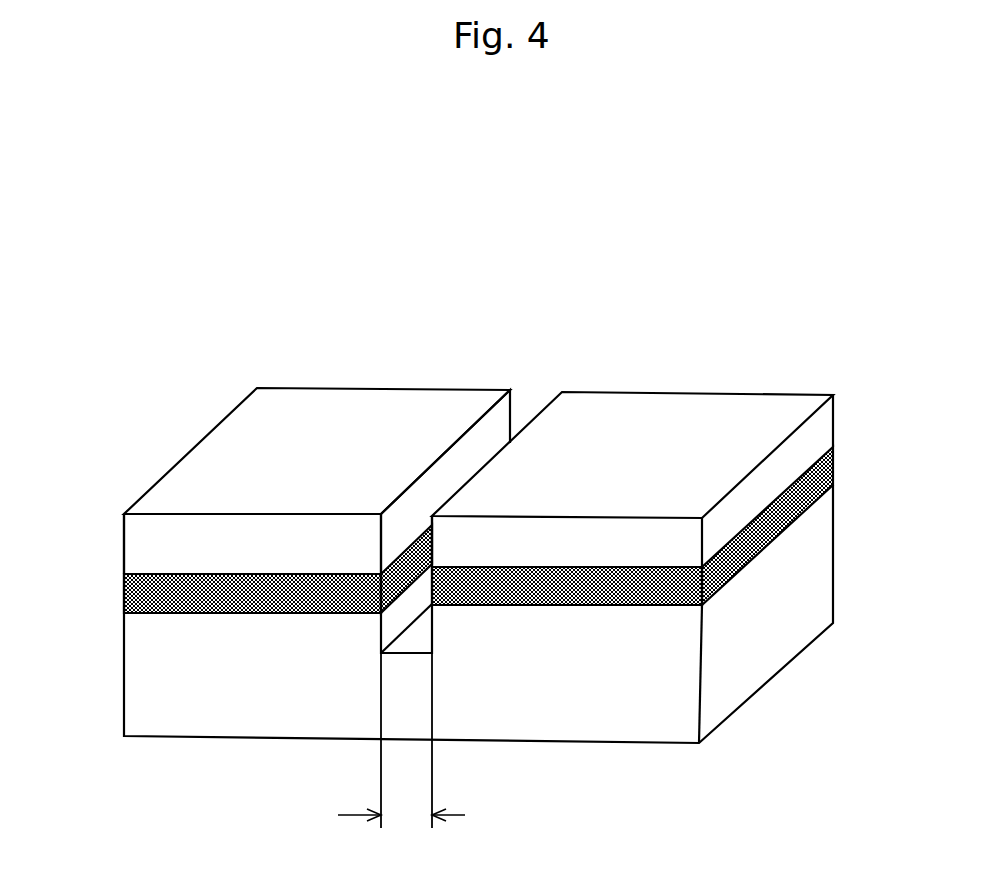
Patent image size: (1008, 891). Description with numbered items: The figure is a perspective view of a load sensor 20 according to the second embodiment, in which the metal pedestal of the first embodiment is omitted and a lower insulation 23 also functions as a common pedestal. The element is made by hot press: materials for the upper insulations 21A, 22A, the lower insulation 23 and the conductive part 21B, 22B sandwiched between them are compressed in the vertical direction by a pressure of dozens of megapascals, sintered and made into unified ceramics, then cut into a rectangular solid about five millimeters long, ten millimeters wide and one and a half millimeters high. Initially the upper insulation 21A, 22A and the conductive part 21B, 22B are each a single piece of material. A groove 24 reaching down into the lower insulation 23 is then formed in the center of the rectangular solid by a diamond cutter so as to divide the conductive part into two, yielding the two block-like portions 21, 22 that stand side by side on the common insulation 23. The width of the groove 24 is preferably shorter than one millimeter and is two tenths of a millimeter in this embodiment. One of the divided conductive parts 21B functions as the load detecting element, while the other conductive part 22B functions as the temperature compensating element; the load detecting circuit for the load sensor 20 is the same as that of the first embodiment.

The load sensor 20 is at (316, 267).
The divided element portion 21 is at (335, 410).
The insulation 21A is at (152, 542).
The conductive part 21B is at (156, 612).
The divided element portion 22 is at (660, 417).
The insulation 22A is at (820, 432).
The conductive part 22B is at (818, 497).
The insulation 23 is at (560, 718).
The groove 24 is at (472, 458).